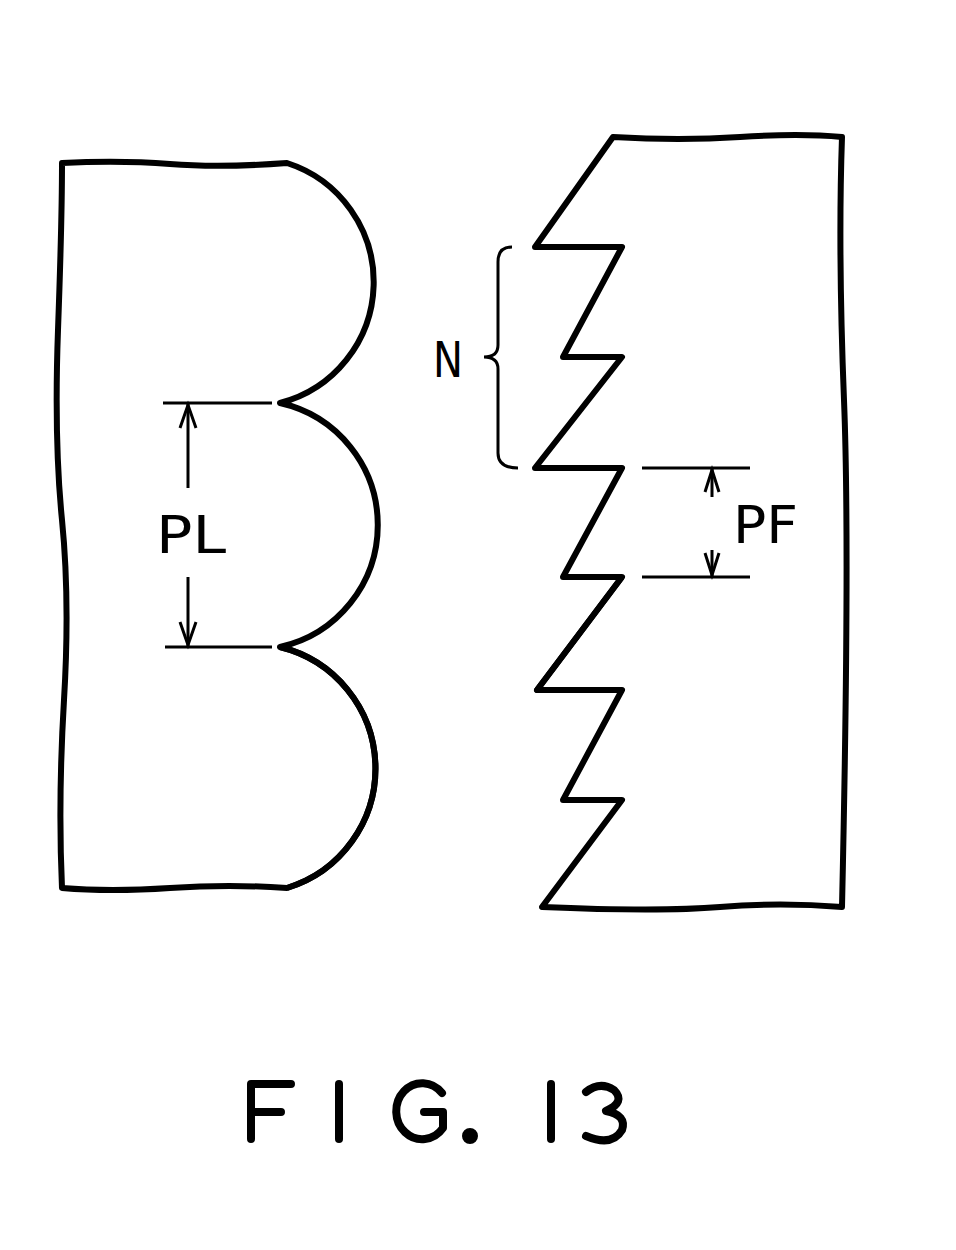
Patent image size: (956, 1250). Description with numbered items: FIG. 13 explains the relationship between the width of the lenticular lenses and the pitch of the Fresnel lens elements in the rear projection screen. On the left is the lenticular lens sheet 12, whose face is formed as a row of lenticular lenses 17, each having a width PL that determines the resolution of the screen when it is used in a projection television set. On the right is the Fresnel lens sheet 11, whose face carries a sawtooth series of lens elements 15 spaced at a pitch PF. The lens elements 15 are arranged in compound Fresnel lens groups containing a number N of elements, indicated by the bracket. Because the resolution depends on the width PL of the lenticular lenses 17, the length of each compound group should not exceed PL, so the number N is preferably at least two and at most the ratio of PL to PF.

The lenticular lens sheet 12 is at (184, 186).
The Fresnel lens sheet 11 is at (748, 172).
The lens elements 15 is at (577, 635).
The lenticular lenses 17 is at (377, 775).